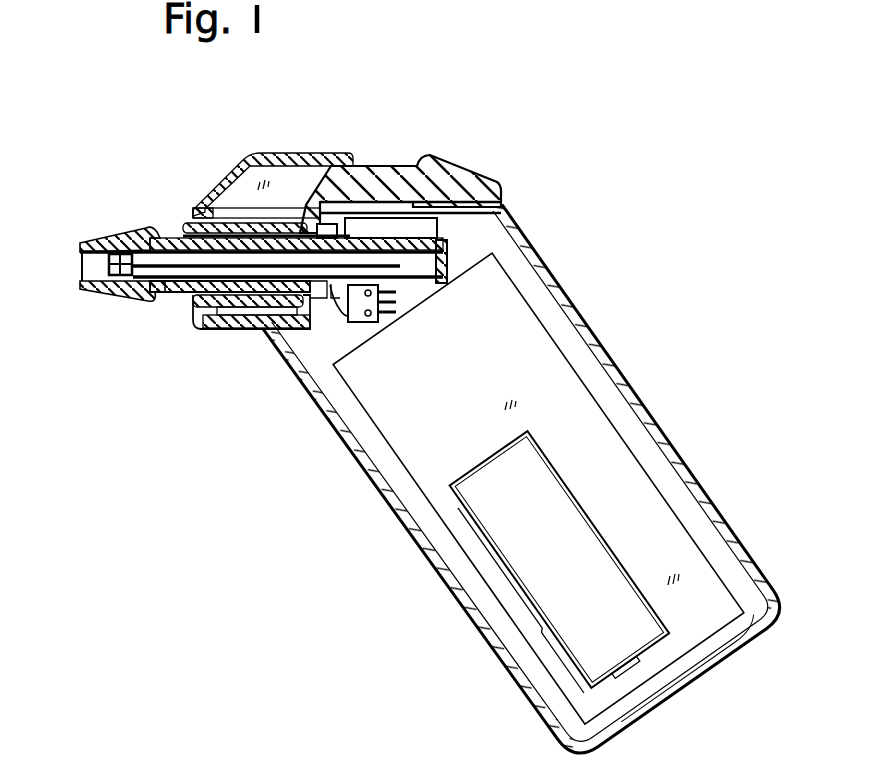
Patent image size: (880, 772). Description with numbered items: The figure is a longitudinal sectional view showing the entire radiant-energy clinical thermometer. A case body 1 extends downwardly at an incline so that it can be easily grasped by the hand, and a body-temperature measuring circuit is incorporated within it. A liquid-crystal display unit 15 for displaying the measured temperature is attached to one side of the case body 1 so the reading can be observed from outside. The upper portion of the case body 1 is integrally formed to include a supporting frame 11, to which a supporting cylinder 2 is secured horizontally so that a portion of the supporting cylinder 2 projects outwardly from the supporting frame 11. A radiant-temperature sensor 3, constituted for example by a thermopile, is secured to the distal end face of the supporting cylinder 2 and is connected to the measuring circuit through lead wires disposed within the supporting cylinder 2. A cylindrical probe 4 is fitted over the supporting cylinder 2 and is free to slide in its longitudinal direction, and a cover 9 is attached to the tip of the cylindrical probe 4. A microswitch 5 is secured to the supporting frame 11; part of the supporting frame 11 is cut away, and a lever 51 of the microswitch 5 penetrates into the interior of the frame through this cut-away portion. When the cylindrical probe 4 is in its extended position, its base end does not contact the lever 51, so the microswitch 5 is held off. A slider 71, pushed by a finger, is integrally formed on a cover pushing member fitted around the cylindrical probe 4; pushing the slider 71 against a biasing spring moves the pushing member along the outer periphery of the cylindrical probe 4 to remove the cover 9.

The case body 1 is at (627, 393).
The supporting cylinder 2 is at (170, 256).
The radiant-temperature sensor 3 is at (110, 264).
The cylindrical probe 4 is at (167, 300).
The microswitch 5 is at (361, 322).
The cover 9 is at (133, 299).
The supporting frame 11 is at (447, 287).
The liquid-crystal display unit 15 is at (600, 570).
The lever 51 is at (333, 305).
The slider 71 is at (447, 170).